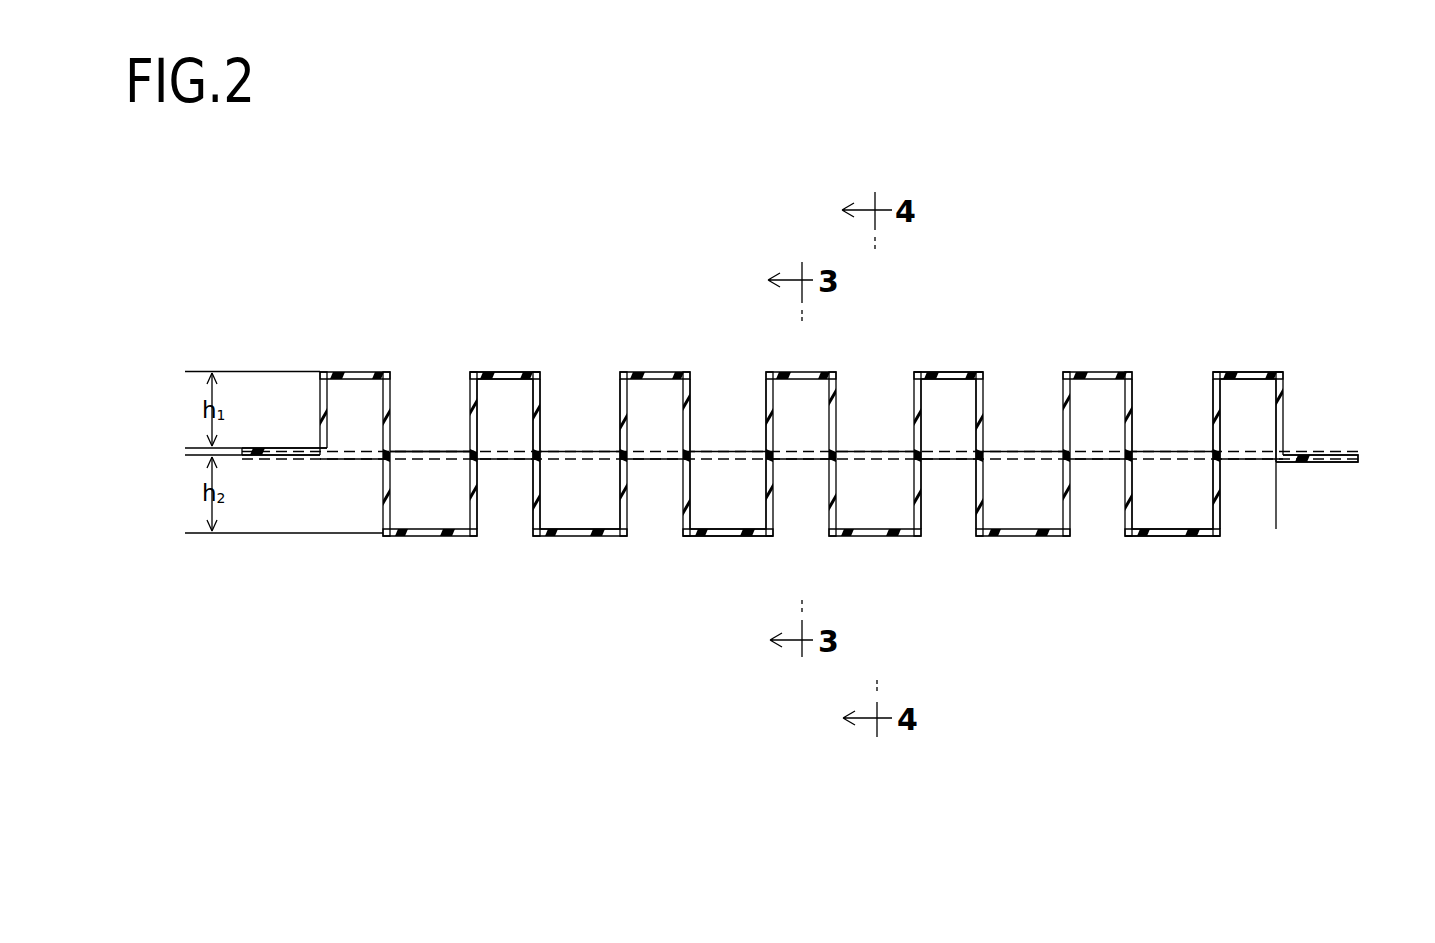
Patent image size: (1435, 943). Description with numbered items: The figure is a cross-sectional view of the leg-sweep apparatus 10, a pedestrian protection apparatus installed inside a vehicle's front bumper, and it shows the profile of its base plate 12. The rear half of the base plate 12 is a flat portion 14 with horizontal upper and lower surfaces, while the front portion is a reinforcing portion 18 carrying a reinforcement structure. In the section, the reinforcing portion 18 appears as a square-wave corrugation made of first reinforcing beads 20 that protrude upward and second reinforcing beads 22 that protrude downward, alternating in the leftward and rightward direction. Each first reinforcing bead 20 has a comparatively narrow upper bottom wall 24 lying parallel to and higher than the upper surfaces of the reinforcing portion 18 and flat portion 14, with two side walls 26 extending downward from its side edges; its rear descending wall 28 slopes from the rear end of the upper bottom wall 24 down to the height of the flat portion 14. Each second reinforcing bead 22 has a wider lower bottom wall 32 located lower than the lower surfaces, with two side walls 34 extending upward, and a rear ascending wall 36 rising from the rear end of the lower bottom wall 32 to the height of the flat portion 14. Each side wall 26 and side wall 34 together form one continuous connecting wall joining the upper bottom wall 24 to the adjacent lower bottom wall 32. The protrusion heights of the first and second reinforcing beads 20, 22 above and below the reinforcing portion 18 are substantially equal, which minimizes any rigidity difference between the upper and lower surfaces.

The leg-sweep apparatus 10 is at (1072, 270).
The base plate 12 is at (1325, 485).
The flat portion 14 is at (417, 437).
The reinforcing portion 18 is at (838, 497).
The first reinforcing bead 20 is at (361, 360).
The second reinforcing bead 22 is at (420, 550).
The upper bottom wall 24 is at (500, 373).
The side wall 26 is at (470, 428).
The rear descending wall 28 is at (500, 428).
The lower bottom wall 32 is at (712, 540).
The side wall 34 is at (480, 485).
The rear ascending wall 36 is at (575, 483).